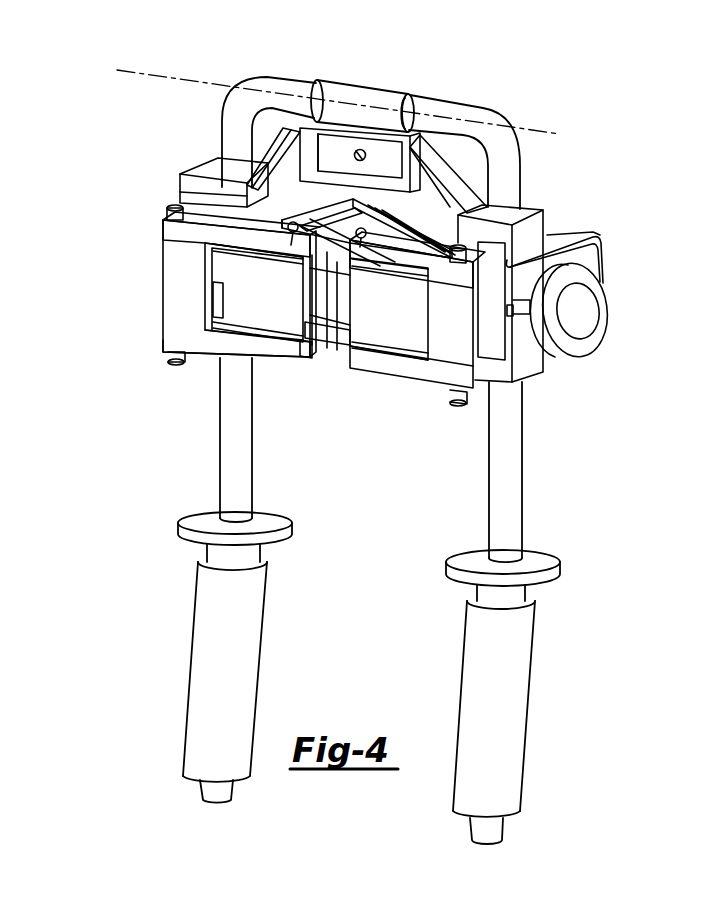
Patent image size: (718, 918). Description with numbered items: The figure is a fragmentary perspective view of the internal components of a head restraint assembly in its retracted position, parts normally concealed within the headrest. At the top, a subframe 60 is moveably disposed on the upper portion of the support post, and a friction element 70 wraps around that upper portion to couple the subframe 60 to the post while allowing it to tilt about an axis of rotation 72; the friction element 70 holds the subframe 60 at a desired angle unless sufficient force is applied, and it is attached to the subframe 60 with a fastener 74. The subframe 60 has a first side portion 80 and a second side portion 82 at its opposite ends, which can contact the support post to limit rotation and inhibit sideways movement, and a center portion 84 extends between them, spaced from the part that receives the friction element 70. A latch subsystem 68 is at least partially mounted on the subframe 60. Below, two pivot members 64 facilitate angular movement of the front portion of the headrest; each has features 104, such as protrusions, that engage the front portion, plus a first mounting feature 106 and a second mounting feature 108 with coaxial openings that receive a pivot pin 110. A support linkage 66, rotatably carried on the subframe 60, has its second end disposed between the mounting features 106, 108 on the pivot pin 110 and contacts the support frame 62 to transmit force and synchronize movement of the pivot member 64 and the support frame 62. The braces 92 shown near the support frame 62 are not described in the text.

The handle 60 is at (452, 152).
The platform 62 is at (345, 214).
The clamp assembly 64 is at (160, 305).
The clamp pad 66 is at (262, 318).
The adjustment knob 68 is at (607, 310).
The grip 70 is at (367, 86).
The handle axis 72 is at (553, 128).
The aperture 74 is at (361, 149).
The left mounting block 80 is at (180, 190).
The right mounting block 82 is at (540, 222).
The bracket 84 is at (333, 338).
The support brace 92 is at (297, 218).
The fastener stem 104 is at (184, 213).
The upper jaw 106 is at (263, 237).
The lower jaw 108 is at (285, 360).
The nut 110 is at (323, 262).